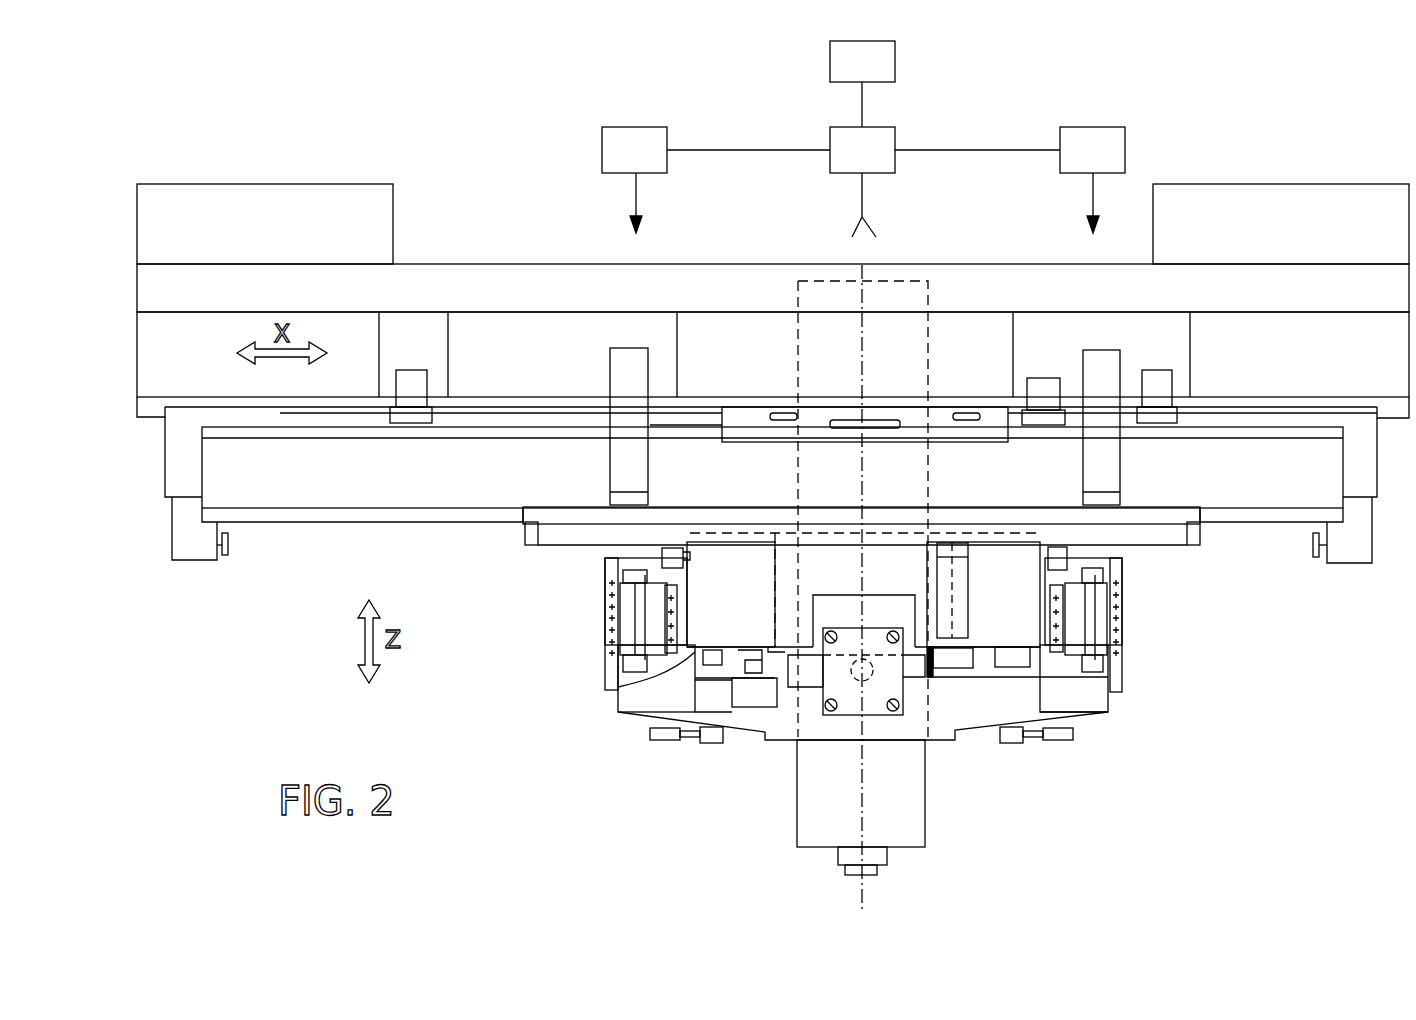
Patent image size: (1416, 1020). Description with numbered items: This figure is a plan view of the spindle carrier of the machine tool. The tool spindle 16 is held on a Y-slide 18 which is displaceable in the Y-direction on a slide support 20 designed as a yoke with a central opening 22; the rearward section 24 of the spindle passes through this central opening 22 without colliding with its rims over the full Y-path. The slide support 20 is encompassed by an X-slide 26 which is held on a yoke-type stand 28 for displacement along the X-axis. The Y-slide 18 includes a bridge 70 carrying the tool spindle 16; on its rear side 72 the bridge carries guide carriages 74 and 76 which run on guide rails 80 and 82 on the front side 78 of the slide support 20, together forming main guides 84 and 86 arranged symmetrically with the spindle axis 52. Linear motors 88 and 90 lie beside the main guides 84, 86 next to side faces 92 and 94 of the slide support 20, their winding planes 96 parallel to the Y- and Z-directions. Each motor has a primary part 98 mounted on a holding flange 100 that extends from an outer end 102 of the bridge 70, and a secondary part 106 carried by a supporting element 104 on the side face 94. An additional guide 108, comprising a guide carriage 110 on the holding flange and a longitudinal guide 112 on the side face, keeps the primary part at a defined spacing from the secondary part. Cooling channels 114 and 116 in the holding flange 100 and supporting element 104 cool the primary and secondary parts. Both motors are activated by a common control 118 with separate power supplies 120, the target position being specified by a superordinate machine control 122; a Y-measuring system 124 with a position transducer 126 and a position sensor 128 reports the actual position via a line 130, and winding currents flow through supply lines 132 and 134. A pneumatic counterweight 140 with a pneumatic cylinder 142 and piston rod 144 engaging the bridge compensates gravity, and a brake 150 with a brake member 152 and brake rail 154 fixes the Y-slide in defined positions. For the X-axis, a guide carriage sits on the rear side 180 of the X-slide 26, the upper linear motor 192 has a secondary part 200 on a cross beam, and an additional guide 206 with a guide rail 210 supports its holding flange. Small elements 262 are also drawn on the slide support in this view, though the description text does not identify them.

The tool spindle 16 is at (823, 843).
The Y-slide 18 is at (781, 758).
The slide support 20 is at (742, 557).
The central opening 22 is at (783, 542).
The rearward section 24 is at (888, 292).
The X-slide 26 is at (718, 548).
The stand 28 is at (194, 190).
The spindle axis 52 is at (875, 915).
The bridge 70 is at (753, 667).
The rear side 72 is at (1075, 705).
The guide carriage 74 is at (697, 680).
The guide carriage 76 is at (1100, 690).
The front side 78 is at (700, 657).
The guide rail 80 is at (698, 672).
The guide rail 82 is at (1030, 665).
The main guide 84 is at (700, 690).
The main guide 86 is at (1045, 680).
The linear motor 88 is at (566, 616).
The linear motor 90 is at (1138, 598).
The side face 92 is at (683, 568).
The side face 94 is at (1040, 577).
The winding plane 96 is at (610, 655).
The primary part 98 is at (628, 635).
The holding flange 100 is at (1122, 655).
The outer end 102 is at (1118, 700).
The supporting element 104 is at (665, 597).
The secondary part 106 is at (660, 623).
The additional guide 108 is at (640, 546).
The guide carriage 110 is at (716, 548).
The longitudinal guide 112 is at (665, 547).
The cooling channel 114 is at (640, 660).
The cooling channel 116 is at (612, 590).
The control 118 is at (862, 127).
The power supply 120 is at (863, 150).
The machine control 122 is at (862, 61).
The Y-measuring system 124 is at (1030, 698).
The position transducer 126 is at (995, 672).
The position sensor 128 is at (958, 688).
The line 130 is at (862, 205).
The supply line 132 is at (636, 190).
The supply line 134 is at (1093, 197).
The pneumatic counterweight 140 is at (880, 730).
The pneumatic cylinder 142 is at (875, 640).
The piston rod 144 is at (857, 663).
The brake 150 is at (755, 718).
The brake member 152 is at (715, 666).
The brake rail 154 is at (690, 693).
The rear side 180 is at (1035, 400).
The linear motor 192 is at (285, 497).
The secondary part 200 is at (320, 500).
The additional guide 206 is at (1272, 418).
The guide rail 210 is at (1203, 423).
The clamps 262 is at (967, 413).